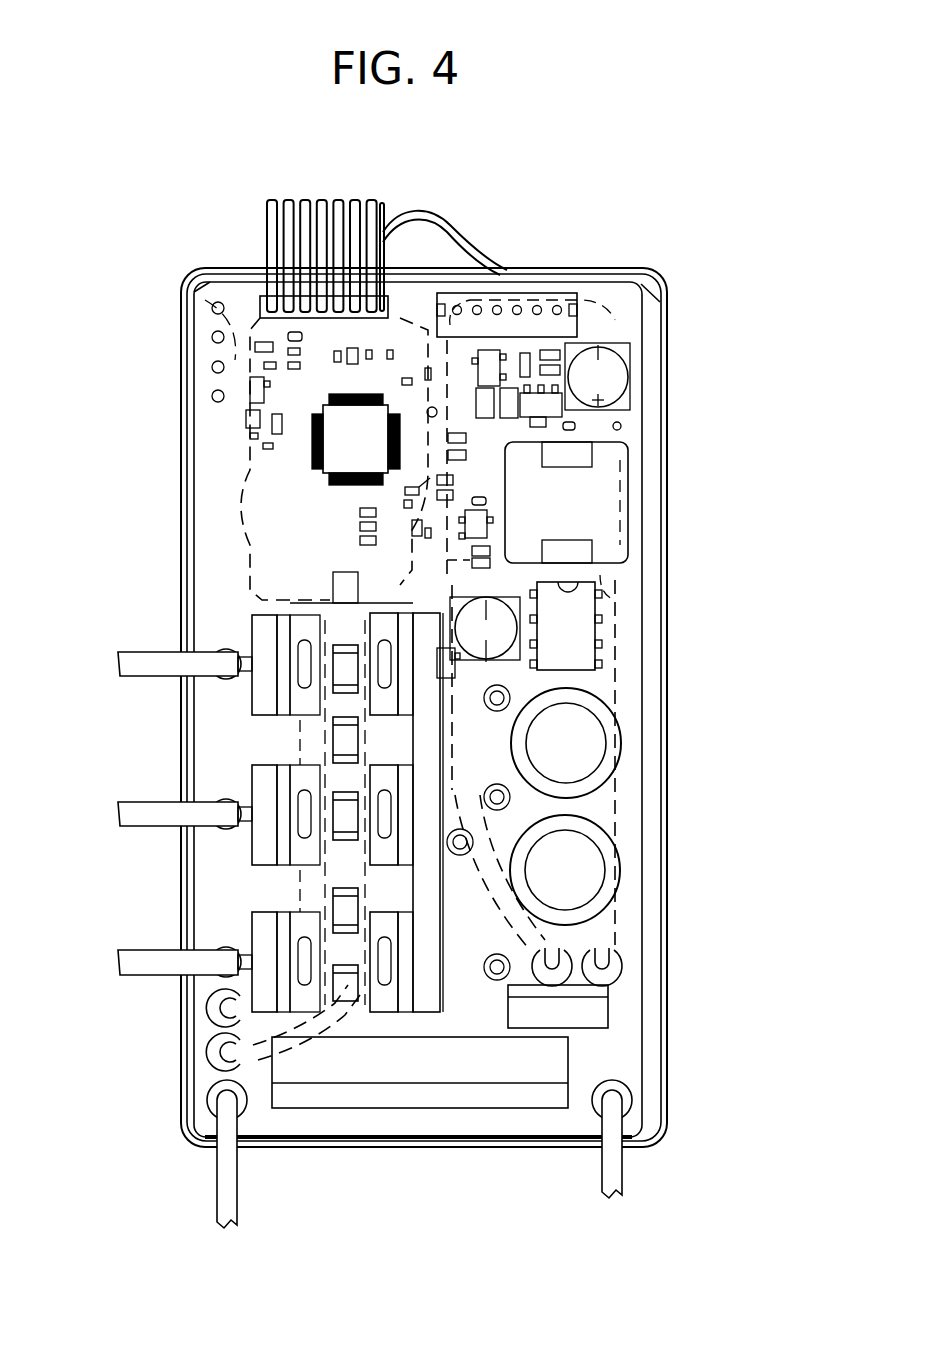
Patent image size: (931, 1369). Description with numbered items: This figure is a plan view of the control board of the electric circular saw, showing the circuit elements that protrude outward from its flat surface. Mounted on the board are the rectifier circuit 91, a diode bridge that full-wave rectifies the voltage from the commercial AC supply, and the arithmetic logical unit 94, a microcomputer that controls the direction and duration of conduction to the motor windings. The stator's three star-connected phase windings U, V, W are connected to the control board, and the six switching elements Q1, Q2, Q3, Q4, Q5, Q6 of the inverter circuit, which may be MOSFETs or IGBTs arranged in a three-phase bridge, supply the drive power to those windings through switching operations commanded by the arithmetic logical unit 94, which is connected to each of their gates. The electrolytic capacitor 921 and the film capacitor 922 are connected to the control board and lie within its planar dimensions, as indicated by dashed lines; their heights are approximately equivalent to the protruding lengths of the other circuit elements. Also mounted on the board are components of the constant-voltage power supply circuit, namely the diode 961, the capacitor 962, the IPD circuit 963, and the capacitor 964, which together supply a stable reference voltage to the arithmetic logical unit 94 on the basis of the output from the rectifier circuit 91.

The rectifier circuit 91 is at (418, 1095).
The arithmetic logical unit 94 is at (312, 417).
The electrolytic capacitor 921 is at (420, 290).
The film capacitor 922 is at (600, 322).
The diode 961 is at (595, 1012).
The capacitor 962 is at (563, 877).
The IPD circuit 963 is at (580, 652).
The capacitor 964 is at (567, 750).
The switching element Q1 is at (385, 1005).
The switching element Q2 is at (415, 855).
The switching element Q3 is at (413, 633).
The switching element Q4 is at (287, 983).
The switching element Q5 is at (252, 848).
The switching element Q6 is at (250, 702).
The winding W is at (185, 676).
The winding V is at (185, 825).
The winding U is at (185, 976).